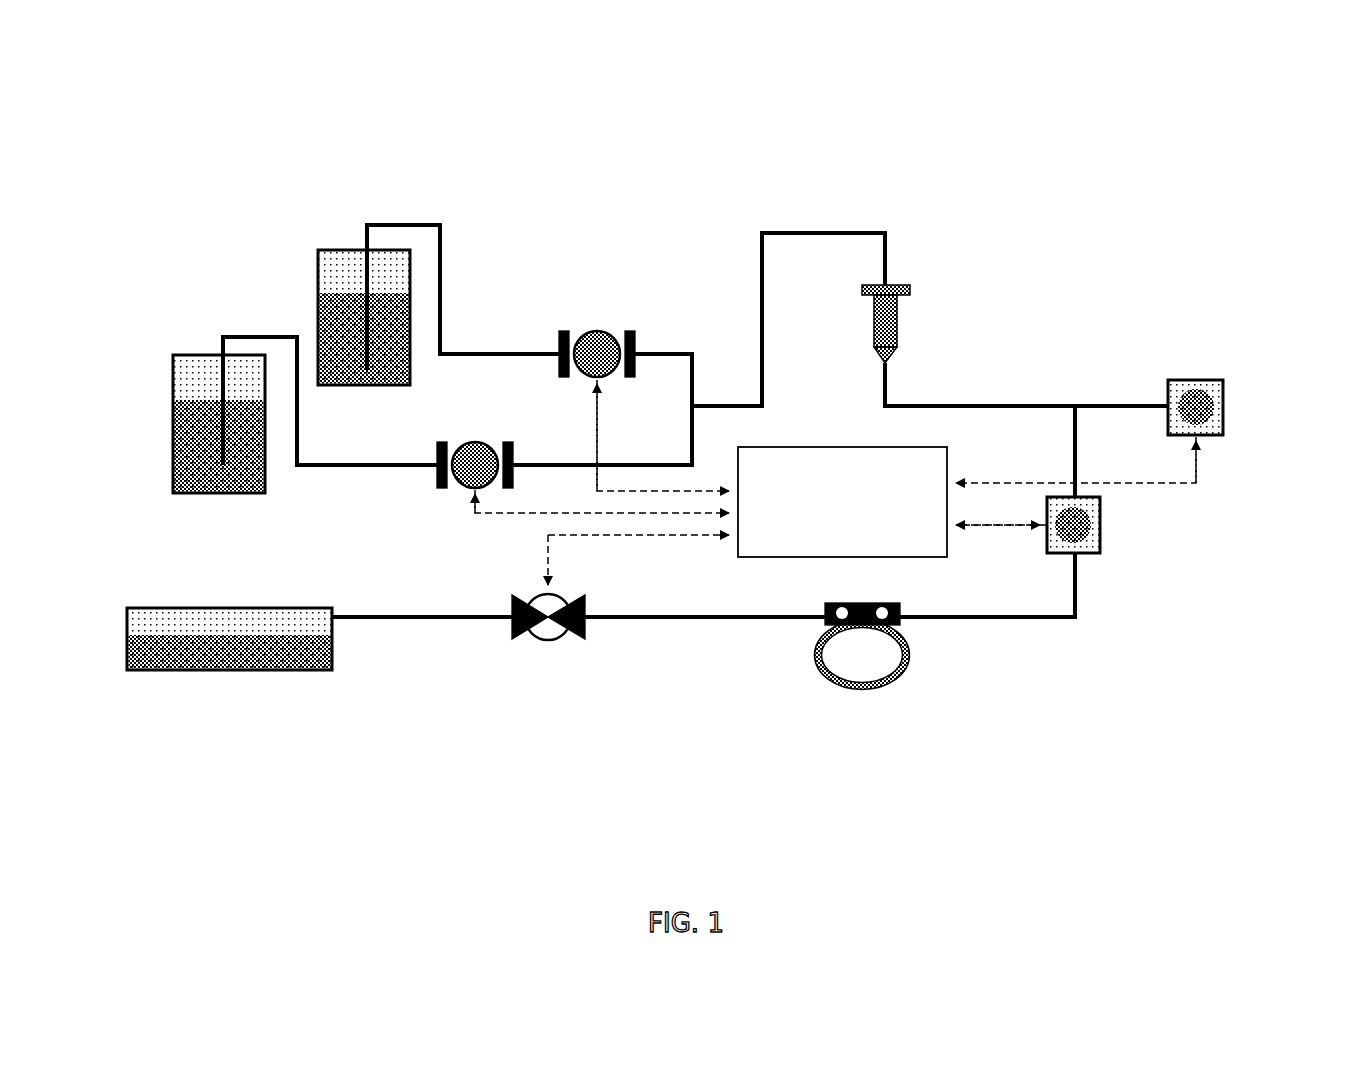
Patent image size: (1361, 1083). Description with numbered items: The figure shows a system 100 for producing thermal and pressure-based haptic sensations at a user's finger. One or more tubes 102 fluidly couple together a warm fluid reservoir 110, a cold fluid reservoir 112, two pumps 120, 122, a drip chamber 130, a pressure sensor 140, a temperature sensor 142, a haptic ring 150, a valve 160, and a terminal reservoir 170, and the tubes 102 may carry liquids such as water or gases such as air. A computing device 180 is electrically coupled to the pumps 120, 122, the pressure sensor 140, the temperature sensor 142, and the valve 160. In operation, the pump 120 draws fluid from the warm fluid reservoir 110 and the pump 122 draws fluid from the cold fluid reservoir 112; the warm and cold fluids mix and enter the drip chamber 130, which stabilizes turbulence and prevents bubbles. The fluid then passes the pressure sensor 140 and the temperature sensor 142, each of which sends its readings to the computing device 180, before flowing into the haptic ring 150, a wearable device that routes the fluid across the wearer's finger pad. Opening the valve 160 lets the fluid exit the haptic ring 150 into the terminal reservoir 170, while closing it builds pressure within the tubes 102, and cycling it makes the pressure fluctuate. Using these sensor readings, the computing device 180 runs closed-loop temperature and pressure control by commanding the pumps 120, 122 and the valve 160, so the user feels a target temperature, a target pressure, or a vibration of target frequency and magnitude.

The system 100 is at (1090, 52).
The tubes 102 is at (946, 405).
The warm fluid reservoir 110 is at (190, 355).
The cold fluid reservoir 112 is at (353, 248).
The pump 120 is at (452, 484).
The pump 122 is at (598, 331).
The drip chamber 130 is at (897, 308).
The pressure sensor 140 is at (1198, 380).
The temperature sensor 142 is at (1103, 525).
The haptic ring 150 is at (907, 653).
The valve 160 is at (548, 640).
The terminal reservoir 170 is at (205, 670).
The computing device 180 is at (835, 482).